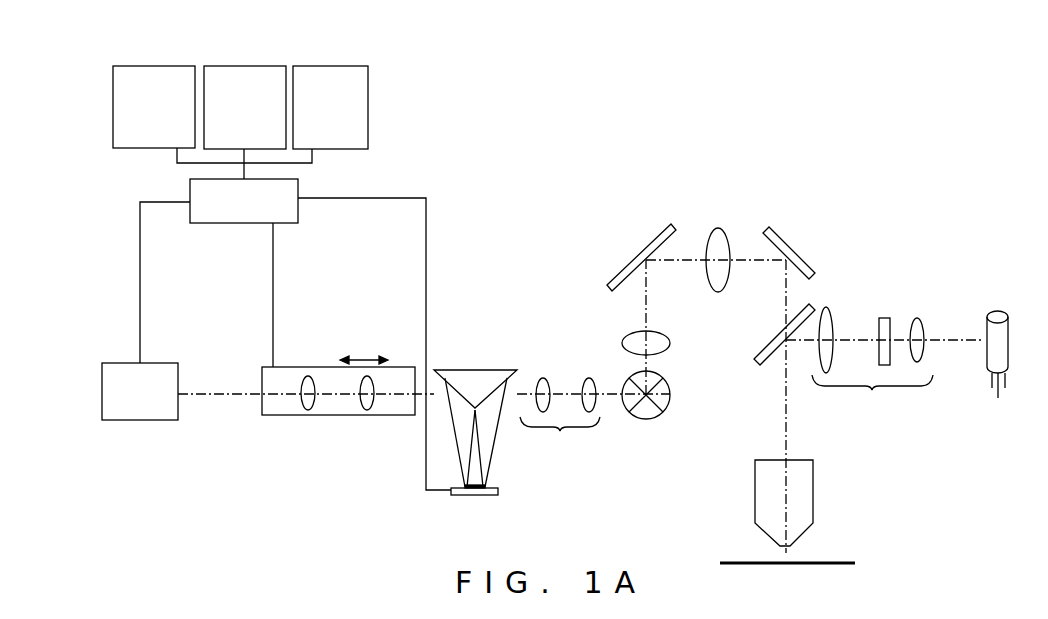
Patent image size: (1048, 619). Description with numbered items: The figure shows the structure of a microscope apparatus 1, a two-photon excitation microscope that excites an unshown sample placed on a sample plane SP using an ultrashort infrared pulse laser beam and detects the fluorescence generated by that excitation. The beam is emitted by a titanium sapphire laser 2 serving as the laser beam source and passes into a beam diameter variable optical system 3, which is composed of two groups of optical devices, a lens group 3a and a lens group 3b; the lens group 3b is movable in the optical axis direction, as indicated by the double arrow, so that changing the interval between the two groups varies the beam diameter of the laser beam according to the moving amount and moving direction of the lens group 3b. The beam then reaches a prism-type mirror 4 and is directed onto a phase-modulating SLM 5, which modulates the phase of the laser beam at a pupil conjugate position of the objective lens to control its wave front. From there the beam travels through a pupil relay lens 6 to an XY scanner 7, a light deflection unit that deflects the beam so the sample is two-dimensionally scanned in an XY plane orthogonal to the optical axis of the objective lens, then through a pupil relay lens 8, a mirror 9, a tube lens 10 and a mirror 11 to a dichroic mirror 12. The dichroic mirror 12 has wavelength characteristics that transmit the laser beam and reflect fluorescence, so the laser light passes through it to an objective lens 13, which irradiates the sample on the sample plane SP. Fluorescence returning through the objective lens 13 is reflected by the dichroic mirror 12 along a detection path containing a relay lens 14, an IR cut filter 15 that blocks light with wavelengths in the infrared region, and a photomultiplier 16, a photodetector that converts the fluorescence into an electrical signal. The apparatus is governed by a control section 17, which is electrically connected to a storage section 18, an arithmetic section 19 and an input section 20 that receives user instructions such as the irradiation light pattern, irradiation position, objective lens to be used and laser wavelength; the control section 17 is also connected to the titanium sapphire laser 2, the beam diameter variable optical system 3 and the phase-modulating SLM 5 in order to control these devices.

The microscope apparatus 1 is at (1020, 83).
The titanium sapphire laser 2 is at (161, 363).
The beam diameter variable optical system 3 is at (290, 367).
The lens group 3a is at (308, 410).
The lens group 3b is at (367, 410).
The prism-type mirror 4 is at (478, 369).
The phase-modulating SLM 5 is at (475, 495).
The pupil relay lens 6 is at (560, 417).
The XY scanner 7 is at (645, 412).
The pupil relay lens 8 is at (623, 343).
The mirror 9 is at (652, 243).
The tube lens 10 is at (727, 233).
The mirror 11 is at (790, 240).
The dichroic mirror 12 is at (765, 350).
The objective lens 13 is at (813, 480).
The relay lens 14 is at (872, 360).
The IR cut filter 15 is at (887, 318).
The photomultiplier 16 is at (997, 310).
The control section 17 is at (300, 186).
The storage section 18 is at (178, 63).
The arithmetic section 19 is at (245, 63).
The input section 20 is at (313, 63).
The sample plane SP is at (843, 562).